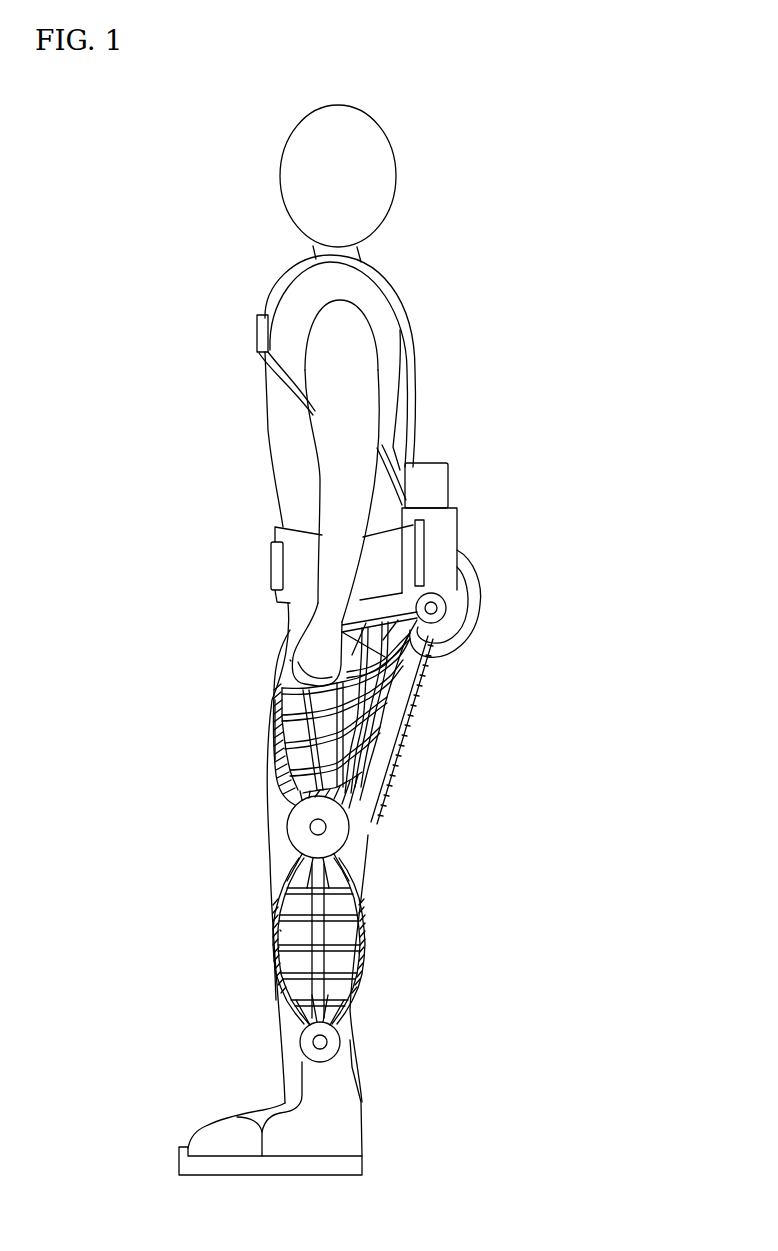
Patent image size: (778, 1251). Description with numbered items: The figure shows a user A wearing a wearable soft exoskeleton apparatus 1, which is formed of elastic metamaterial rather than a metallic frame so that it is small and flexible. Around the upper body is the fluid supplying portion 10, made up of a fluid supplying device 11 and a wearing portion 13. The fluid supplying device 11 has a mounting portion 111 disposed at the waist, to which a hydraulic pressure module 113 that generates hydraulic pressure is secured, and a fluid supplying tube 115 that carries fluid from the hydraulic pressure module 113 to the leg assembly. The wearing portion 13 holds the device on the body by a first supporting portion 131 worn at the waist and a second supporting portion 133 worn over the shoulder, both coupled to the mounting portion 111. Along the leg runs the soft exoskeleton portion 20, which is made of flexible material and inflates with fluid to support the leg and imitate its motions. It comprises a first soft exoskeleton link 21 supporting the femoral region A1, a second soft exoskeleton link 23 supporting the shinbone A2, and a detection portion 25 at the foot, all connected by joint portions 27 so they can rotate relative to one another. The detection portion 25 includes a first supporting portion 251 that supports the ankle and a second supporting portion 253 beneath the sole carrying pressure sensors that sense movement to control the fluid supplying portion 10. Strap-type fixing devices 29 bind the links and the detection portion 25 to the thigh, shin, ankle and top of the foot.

The wearable soft exoskeleton apparatus 1 is at (568, 255).
The fluid supplying portion 10 is at (354, 460).
The fluid supplying device 11 is at (483, 561).
The mounting portion 111 is at (445, 550).
The hydraulic pressure module 113 is at (438, 483).
The fluid supplying tube 115 is at (478, 618).
The wearing portion 13 is at (384, 380).
The first supporting portion 131 is at (297, 568).
The second supporting portion 133 is at (412, 337).
The soft exoskeleton portion 20 is at (336, 890).
The first soft exoskeleton link 21 is at (350, 862).
The second soft exoskeleton link 23 is at (382, 910).
The detection portion 25 is at (325, 1115).
The first supporting portion 251 is at (350, 1108).
The second supporting portion 253 is at (362, 1162).
The joint portion 27 is at (447, 605).
The fixing device 29 is at (272, 725).
The user A is at (268, 423).
The femoral region A1 is at (292, 693).
The shinbone A2 is at (293, 932).